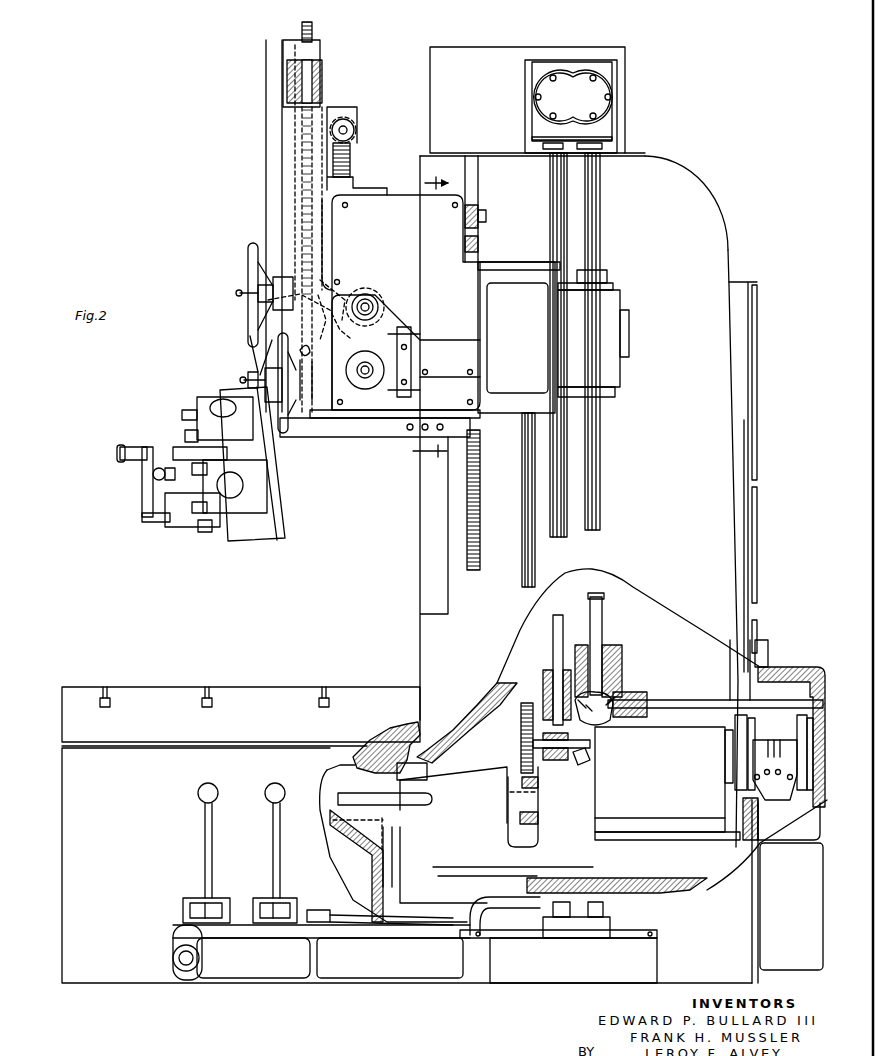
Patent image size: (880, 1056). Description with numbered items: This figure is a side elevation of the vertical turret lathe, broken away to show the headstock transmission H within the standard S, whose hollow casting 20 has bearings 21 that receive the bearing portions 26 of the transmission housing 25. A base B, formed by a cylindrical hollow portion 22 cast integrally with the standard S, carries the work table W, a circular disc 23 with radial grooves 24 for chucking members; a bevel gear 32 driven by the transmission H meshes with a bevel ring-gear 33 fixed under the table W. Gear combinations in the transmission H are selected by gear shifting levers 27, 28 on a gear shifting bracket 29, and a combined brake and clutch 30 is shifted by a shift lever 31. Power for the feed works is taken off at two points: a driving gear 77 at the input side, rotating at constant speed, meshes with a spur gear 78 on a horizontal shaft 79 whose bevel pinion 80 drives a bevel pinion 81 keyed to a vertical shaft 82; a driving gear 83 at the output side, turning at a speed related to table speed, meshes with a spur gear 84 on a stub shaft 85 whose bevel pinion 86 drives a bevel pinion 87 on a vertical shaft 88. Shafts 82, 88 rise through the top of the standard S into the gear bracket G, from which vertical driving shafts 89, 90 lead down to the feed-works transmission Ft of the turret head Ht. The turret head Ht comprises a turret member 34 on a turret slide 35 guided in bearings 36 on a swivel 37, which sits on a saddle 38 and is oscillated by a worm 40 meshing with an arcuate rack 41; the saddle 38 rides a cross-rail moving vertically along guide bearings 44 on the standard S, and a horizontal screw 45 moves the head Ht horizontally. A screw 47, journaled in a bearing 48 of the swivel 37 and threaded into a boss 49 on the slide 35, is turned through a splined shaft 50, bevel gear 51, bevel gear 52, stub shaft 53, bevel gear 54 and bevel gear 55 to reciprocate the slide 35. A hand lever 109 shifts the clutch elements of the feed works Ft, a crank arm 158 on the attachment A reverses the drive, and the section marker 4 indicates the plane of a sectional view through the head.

The gear bracket G is at (523, 46).
The standard S is at (740, 459).
The hollow casting 20 is at (742, 565).
The driving shaft 89 is at (550, 202).
The driving shaft 90 is at (600, 205).
The guide bearings 44 is at (420, 563).
The section line 4 is at (422, 318).
The turret slide 35 is at (268, 185).
The guide bearings 36 is at (292, 48).
The screw 47 is at (312, 28).
The internally threaded boss 49 is at (322, 92).
The swivel 37 is at (324, 116).
The worm 40 is at (356, 129).
The arcuate rack 41 is at (350, 163).
The saddle 38 is at (372, 195).
The attachment A is at (455, 280).
The rotatable shaft 50 is at (380, 303).
The bevel gear 51 is at (370, 299).
The bevel gear 52 is at (346, 300).
The bevel gear 55 is at (325, 272).
The stub shaft 53 is at (346, 322).
The bevel gear 54 is at (324, 322).
The screw 45 is at (366, 380).
The crank arm 158 is at (308, 372).
The feed-works transmission Ft is at (525, 380).
The hand lever 109 is at (236, 298).
The bearing 48 is at (260, 352).
The turret member 34 is at (222, 525).
The turret head Ht is at (250, 525).
The headstock transmission H is at (518, 680).
The work-supporting table W is at (158, 700).
The circular disc 23 is at (192, 698).
The radially-disposed grooves 24 is at (110, 707).
The cylindrical hollow portion 22 is at (70, 780).
The base B is at (134, 966).
The bevel ring-gear 33 is at (352, 762).
The housing 25 is at (462, 778).
The bevel gear 32 is at (405, 793).
The bearing portions 26 is at (568, 878).
The bearings 21 is at (700, 892).
The gear shifting bracket 29 is at (256, 975).
The shift lever 31 is at (314, 910).
The gear shifting lever 27 is at (215, 806).
The gear shifting lever 28 is at (268, 790).
The vertically disposed shaft 88 is at (553, 636).
The vertically disposed shaft 82 is at (602, 614).
The bevel pinion 81 is at (616, 685).
The bevel pinion 87 is at (532, 704).
The shaft 79 is at (700, 700).
The spur gear 84 is at (520, 758).
The stub shaft 85 is at (560, 760).
The bevel pinion 80 is at (615, 718).
The bevel pinion 86 is at (588, 760).
The driving gear 83 is at (538, 826).
The spur gear 78 is at (790, 675).
The driving gear 77 is at (795, 737).
The combined brake and clutch 30 is at (805, 808).